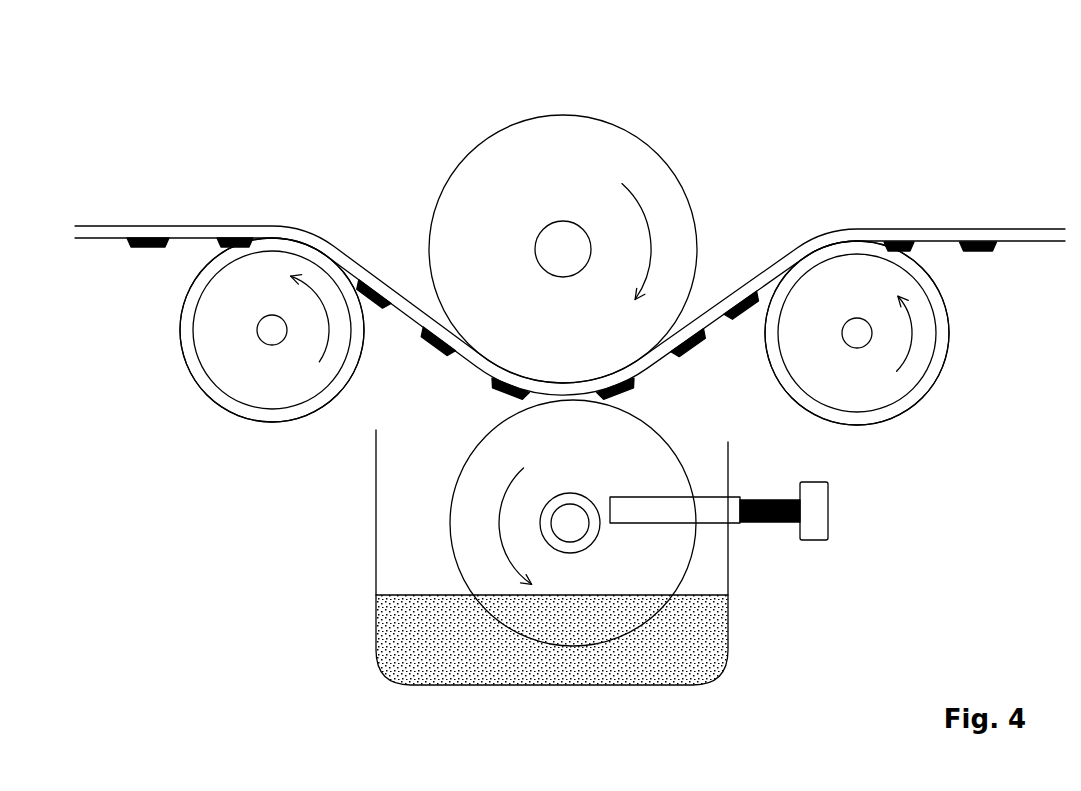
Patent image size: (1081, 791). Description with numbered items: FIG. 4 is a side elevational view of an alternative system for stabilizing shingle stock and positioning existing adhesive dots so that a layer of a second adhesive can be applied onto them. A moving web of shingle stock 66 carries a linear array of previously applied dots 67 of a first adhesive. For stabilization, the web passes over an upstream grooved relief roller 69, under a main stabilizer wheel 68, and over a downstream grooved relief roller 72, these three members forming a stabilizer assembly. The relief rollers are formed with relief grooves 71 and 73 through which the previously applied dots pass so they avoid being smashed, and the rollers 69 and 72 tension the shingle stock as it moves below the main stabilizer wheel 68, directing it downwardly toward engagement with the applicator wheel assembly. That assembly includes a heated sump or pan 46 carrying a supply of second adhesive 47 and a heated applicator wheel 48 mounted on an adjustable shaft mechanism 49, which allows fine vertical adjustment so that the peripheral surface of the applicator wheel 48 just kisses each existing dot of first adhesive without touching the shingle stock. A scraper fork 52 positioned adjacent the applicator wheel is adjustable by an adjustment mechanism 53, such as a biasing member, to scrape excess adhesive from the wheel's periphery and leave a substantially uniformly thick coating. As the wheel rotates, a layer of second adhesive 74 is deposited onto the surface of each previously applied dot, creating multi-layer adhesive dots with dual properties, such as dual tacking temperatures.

The heated sump or pan 46 is at (728, 587).
The second adhesive 47 is at (684, 672).
The applicator wheel 48 is at (473, 528).
The adjustable shaft mechanism 49 is at (570, 556).
The scraper fork 52 is at (663, 508).
The adjustment mechanism 53 is at (820, 528).
The web of shingle stock 66 is at (183, 233).
The previously applied dots of first adhesive 67 is at (683, 350).
The main stabilizer wheel 68 is at (625, 148).
The upstream grooved relief roller 69 is at (866, 382).
The relief groove 71 is at (923, 372).
The downstream grooved relief roller 72 is at (232, 327).
The relief groove 73 is at (221, 393).
The layer of second adhesive 74 is at (432, 333).